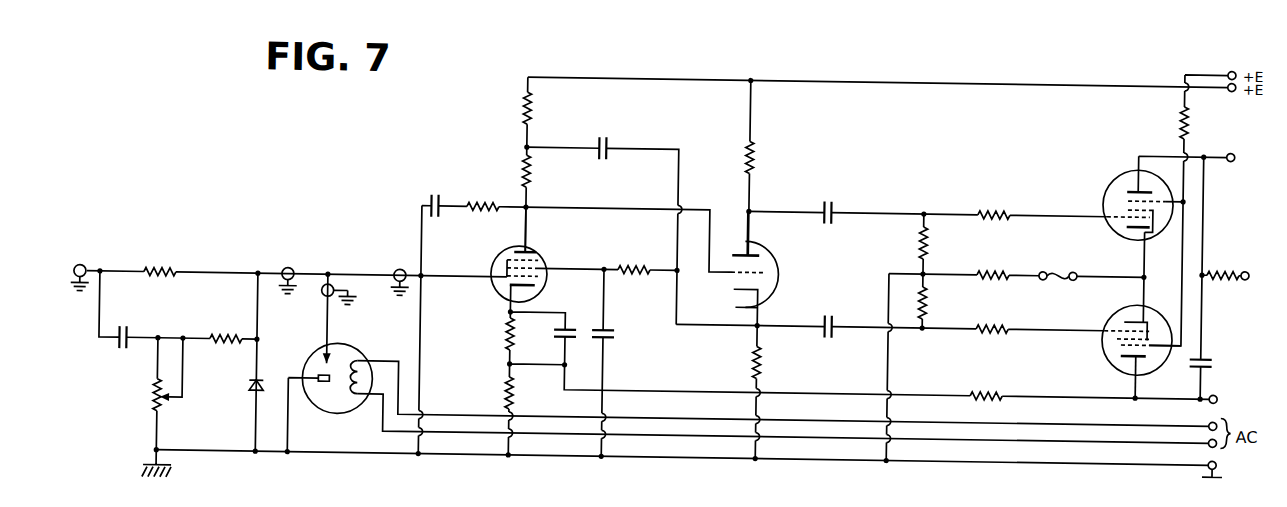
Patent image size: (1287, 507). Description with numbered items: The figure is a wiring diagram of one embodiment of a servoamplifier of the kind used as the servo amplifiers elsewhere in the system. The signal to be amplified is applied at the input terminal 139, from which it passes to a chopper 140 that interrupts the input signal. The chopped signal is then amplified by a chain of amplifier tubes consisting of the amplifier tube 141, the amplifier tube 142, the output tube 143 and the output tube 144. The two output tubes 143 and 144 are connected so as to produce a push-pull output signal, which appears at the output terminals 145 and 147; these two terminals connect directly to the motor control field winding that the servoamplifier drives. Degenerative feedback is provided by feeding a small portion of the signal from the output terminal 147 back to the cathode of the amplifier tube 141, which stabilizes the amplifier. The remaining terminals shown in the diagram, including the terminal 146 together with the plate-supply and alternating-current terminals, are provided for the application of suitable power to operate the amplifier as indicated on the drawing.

The input terminal 139 is at (84, 272).
The chopper 140 is at (346, 350).
The amplifier tube 141 is at (500, 256).
The amplifier tube 142 is at (775, 250).
The output tube 143 is at (1106, 184).
The output tube 144 is at (1107, 352).
The output terminal 145 is at (1229, 145).
The output terminal 146 is at (1245, 263).
The output terminal 147 is at (1219, 387).